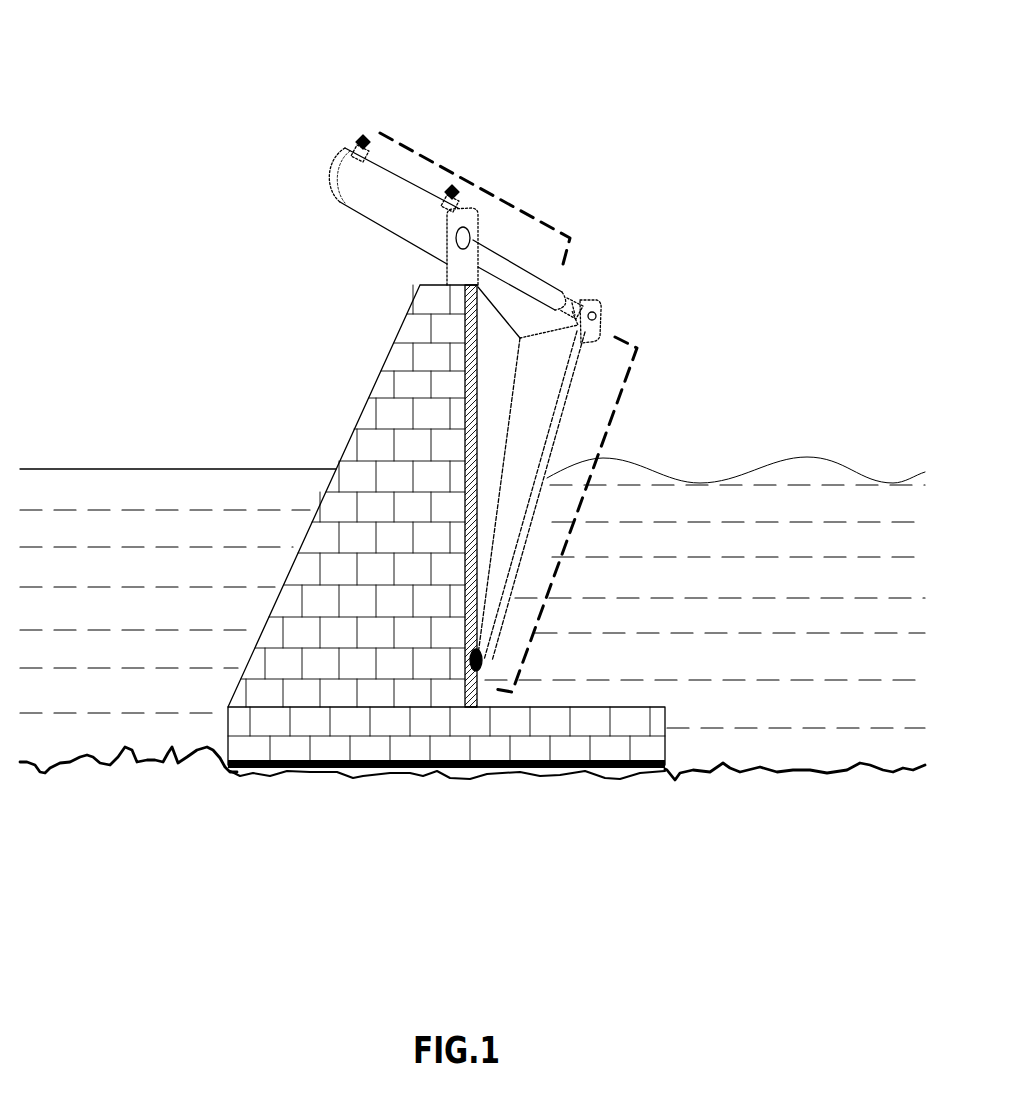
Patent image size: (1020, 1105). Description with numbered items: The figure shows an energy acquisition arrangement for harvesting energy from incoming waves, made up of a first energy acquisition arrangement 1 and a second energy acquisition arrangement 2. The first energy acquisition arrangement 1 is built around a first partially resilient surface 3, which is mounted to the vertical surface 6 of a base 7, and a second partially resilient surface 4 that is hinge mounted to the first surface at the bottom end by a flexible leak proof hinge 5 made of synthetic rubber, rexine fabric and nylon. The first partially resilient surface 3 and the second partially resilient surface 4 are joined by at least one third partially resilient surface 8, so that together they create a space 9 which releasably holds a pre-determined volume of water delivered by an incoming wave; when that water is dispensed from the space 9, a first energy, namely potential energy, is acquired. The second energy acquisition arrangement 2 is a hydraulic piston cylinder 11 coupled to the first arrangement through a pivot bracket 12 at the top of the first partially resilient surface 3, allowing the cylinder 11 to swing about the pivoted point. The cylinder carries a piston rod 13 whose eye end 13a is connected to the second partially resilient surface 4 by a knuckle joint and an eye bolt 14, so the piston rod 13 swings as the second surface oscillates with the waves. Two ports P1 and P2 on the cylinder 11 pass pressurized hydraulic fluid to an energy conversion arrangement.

The first energy acquisition arrangement 1 is at (578, 513).
The second energy acquisition arrangement 2 is at (463, 232).
The first partially resilient surface 3 is at (467, 527).
The second partially resilient surface 4 is at (537, 480).
The flexible leak proof hinge 5 is at (476, 672).
The vertical surface 6 is at (427, 463).
The base 7 is at (350, 770).
The third partially resilient surface 8 is at (513, 332).
The space 9 is at (483, 567).
The hydraulic piston cylinder 11 is at (355, 197).
The pivot bracket 12 is at (467, 207).
The piston rod 13 is at (507, 263).
The eye end 13a is at (570, 293).
The eye bolt 14 is at (593, 313).
The port P1 is at (363, 140).
The port P2 is at (450, 187).